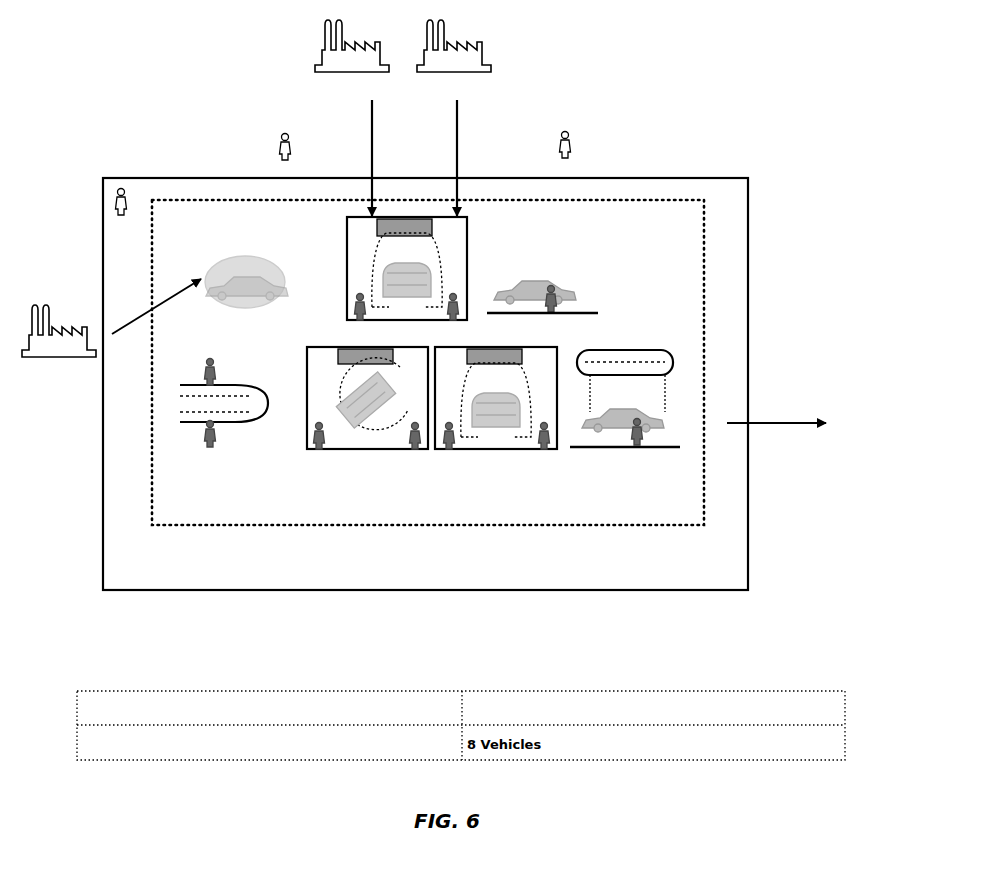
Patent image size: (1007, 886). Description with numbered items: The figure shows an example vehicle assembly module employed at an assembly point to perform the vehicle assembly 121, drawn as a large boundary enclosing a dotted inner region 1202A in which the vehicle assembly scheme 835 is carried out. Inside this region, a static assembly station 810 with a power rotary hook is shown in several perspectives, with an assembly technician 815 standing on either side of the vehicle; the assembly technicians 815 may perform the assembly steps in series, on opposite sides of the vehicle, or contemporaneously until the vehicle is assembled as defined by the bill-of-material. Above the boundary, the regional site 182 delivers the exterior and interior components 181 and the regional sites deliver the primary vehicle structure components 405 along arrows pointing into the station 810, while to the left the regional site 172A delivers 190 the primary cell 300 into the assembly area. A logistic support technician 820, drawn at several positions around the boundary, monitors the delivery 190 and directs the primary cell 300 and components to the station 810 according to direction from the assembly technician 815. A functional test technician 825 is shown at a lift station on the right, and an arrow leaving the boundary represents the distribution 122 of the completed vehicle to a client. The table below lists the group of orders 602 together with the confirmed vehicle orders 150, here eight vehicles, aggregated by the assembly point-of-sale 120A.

The vehicle assembly 121 is at (729, 168).
The assembly area 1202A is at (150, 594).
The vehicle assembly scheme 835 is at (456, 570).
The regional site 182 is at (352, 46).
The primary cell 300 is at (348, 174).
The regional site 172A is at (59, 331).
The exterior and interior components 181 is at (352, 158).
The primary vehicle structure components 405 is at (481, 158).
The logistic support technician 820 is at (262, 128).
The static assembly station 810 is at (407, 268).
The assembly technician 815 is at (410, 282).
The functional test technician 825 is at (652, 418).
The distributes 122 is at (800, 422).
The delivery 190 is at (156, 306).
The group of orders 602 is at (461, 725).
The confirmed vehicle orders 150 is at (576, 710).
The assembly point-of-sale 120A is at (164, 744).